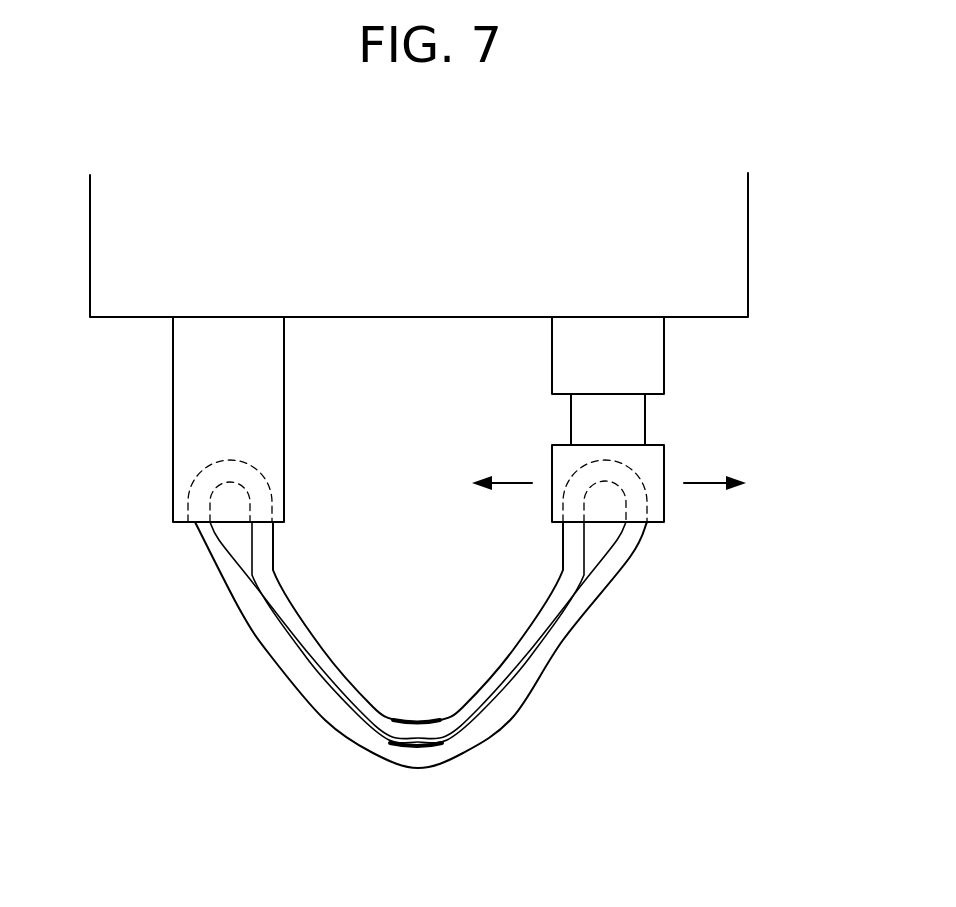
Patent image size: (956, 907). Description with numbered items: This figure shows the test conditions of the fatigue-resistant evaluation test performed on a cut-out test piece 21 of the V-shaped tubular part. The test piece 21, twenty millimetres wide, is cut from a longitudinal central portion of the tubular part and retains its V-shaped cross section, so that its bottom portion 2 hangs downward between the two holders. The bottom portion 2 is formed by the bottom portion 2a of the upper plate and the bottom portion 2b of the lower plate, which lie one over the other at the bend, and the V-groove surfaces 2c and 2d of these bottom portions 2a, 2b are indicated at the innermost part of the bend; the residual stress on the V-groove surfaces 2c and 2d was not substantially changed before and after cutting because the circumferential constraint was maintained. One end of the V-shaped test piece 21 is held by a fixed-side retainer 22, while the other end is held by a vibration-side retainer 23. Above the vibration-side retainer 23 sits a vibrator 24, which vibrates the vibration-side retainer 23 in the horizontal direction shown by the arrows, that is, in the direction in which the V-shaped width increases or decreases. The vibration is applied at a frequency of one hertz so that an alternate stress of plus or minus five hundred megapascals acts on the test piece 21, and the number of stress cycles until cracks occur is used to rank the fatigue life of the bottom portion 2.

The bottom portion 2 is at (418, 708).
The bottom portion of the upper plate 2a is at (408, 732).
The bottom portion of the lower plate 2b is at (418, 760).
The V-groove surface 2c is at (424, 720).
The V-groove surface 2d is at (436, 789).
The test piece 21 is at (513, 717).
The fixed-side retainer 22 is at (182, 376).
The vibration-side retainer 23 is at (664, 507).
The vibrator 24 is at (650, 368).